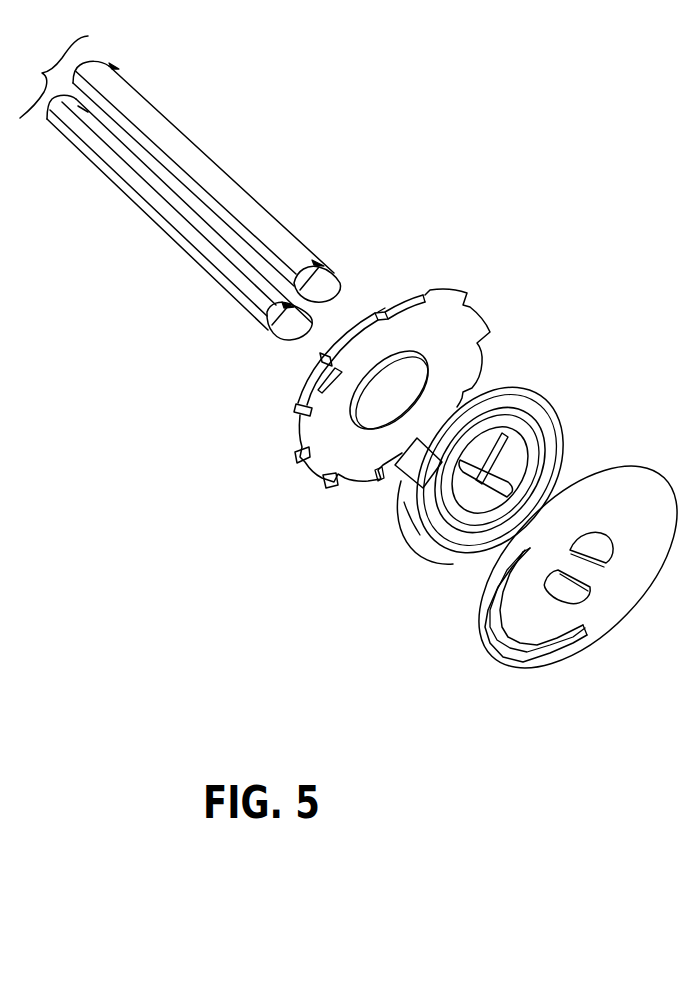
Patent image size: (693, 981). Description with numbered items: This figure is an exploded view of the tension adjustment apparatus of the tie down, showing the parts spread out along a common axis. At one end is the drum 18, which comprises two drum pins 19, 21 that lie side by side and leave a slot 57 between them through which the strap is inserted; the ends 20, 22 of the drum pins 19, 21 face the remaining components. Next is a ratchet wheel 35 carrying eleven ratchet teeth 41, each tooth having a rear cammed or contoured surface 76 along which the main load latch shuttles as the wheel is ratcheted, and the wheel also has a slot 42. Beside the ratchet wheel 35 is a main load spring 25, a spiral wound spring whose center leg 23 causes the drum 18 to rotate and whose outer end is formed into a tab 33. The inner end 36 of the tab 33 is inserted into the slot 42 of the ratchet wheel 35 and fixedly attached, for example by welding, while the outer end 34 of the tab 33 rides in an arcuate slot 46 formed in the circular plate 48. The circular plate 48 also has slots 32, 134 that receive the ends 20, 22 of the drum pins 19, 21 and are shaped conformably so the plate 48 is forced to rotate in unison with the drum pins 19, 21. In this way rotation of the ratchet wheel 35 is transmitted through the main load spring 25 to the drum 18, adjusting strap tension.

The drum 18 is at (51, 77).
The drum pin 19 is at (208, 163).
The drum pin 21 is at (100, 182).
The slot 57 is at (173, 200).
The end of drum pin 20 is at (325, 285).
The end of drum pin 22 is at (282, 328).
The ratchet wheel 35 is at (445, 333).
The rear cammed or contoured surface 76 is at (365, 297).
The ratchet tooth 41 is at (396, 293).
The slot 42 is at (298, 413).
The inner end of tab 36 is at (365, 482).
The main load spring 25 is at (520, 378).
The center leg 23 is at (557, 442).
The tab 33 is at (403, 505).
The outer end of tab 34 is at (428, 538).
The circular plate 48 is at (627, 498).
The slot 32 is at (597, 550).
The slot 134 is at (563, 585).
The arcuate slot 46 is at (540, 652).